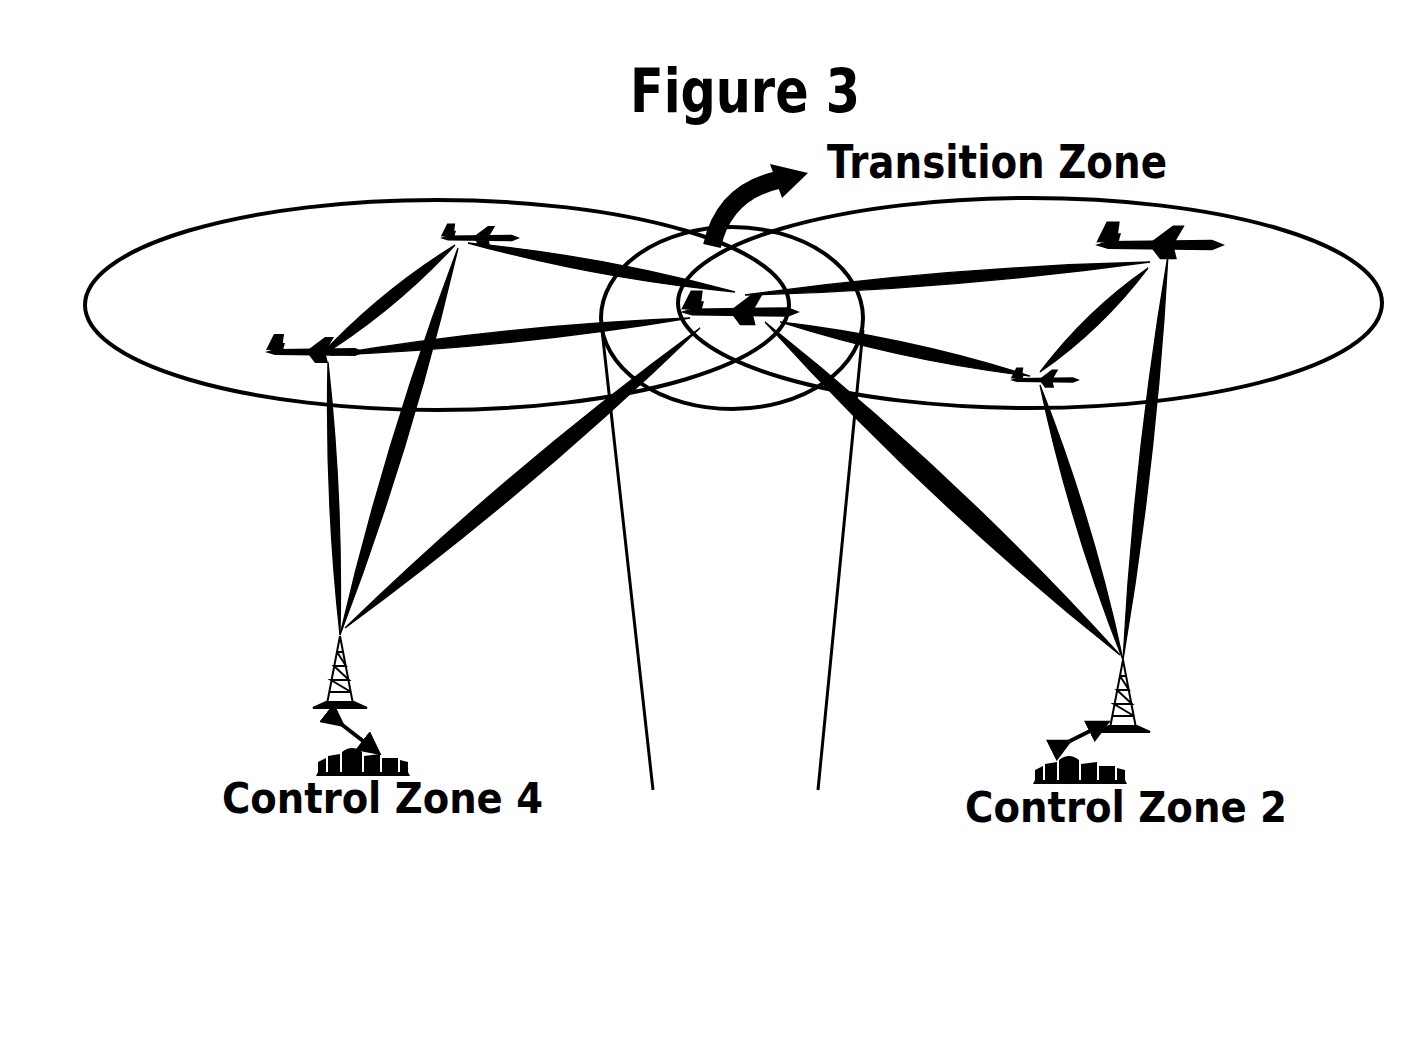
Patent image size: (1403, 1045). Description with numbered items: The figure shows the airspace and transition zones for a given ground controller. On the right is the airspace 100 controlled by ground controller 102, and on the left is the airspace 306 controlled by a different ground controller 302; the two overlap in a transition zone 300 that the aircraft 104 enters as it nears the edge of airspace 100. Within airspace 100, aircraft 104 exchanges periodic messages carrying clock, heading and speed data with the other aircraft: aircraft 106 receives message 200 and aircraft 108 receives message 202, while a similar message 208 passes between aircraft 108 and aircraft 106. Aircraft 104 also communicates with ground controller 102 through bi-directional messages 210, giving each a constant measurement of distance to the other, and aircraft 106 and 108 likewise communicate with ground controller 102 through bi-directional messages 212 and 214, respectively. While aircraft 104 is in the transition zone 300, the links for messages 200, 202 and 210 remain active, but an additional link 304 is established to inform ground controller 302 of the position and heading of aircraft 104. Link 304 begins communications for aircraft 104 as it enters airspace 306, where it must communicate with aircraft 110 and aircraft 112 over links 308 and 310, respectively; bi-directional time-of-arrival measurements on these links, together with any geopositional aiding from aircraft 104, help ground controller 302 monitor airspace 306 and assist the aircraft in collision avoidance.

The airspace 100 is at (1291, 232).
The ground controller 102 is at (1125, 686).
The aircraft 104 is at (745, 325).
The aircraft 106 is at (1035, 390).
The aircraft 108 is at (1150, 248).
The aircraft 110 is at (480, 235).
The aircraft 112 is at (315, 350).
The message 200 is at (885, 335).
The message 202 is at (885, 272).
The message 208 is at (1107, 320).
The bi-directional messages 210 is at (982, 545).
The bi-directional messages 212 is at (1075, 490).
The bi-directional messages 214 is at (1158, 463).
The transition zone 300 is at (1130, 130).
The ground controller 302 is at (335, 670).
The link 304 is at (477, 527).
The airspace 306 is at (602, 205).
The link 308 is at (585, 272).
The link 310 is at (476, 352).